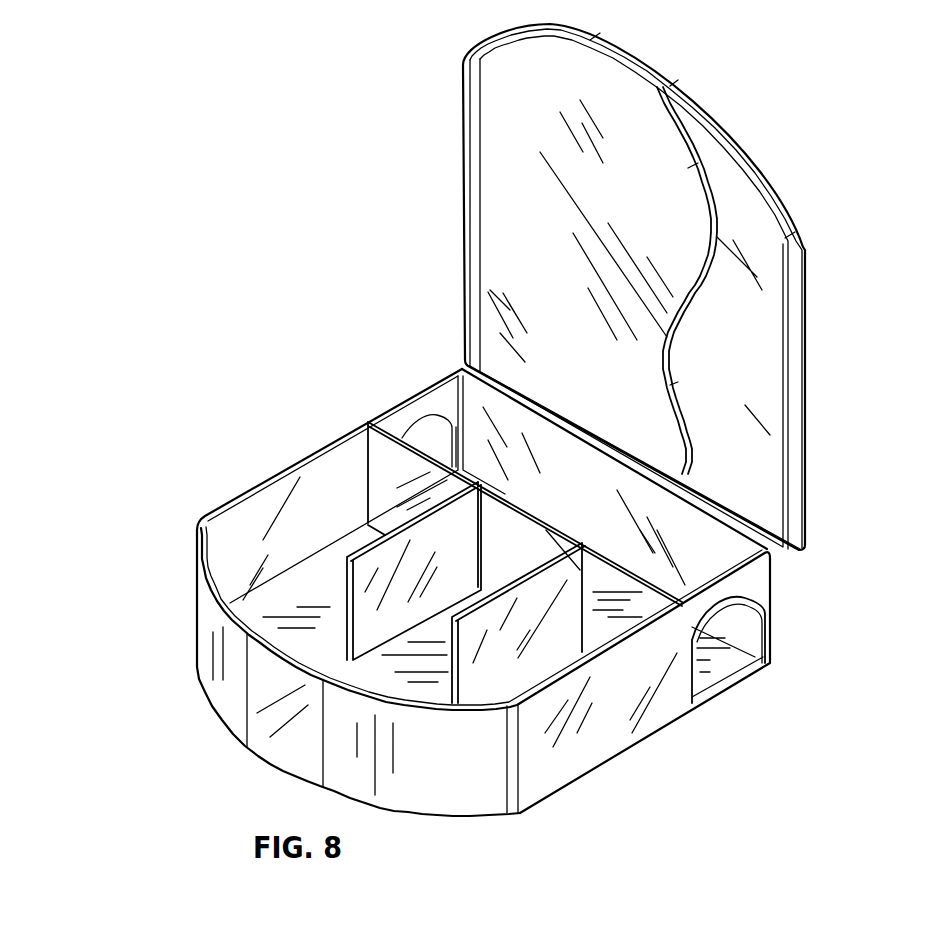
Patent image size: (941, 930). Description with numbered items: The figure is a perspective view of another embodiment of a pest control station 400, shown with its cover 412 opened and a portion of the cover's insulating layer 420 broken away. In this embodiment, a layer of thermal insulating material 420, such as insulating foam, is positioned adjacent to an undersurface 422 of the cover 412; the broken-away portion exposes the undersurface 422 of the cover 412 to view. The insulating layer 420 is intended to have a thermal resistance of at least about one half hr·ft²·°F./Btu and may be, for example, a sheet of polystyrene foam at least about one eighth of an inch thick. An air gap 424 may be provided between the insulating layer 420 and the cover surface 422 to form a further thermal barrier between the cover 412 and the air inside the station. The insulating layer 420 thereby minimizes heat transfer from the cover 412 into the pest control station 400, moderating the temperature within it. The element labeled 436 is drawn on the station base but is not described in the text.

The pest control station 400 is at (244, 138).
The cover 412 is at (743, 135).
The insulating layer 420 is at (552, 195).
The undersurface 422 is at (760, 424).
The air gap 424 is at (683, 324).
The base side wall 436 is at (197, 652).